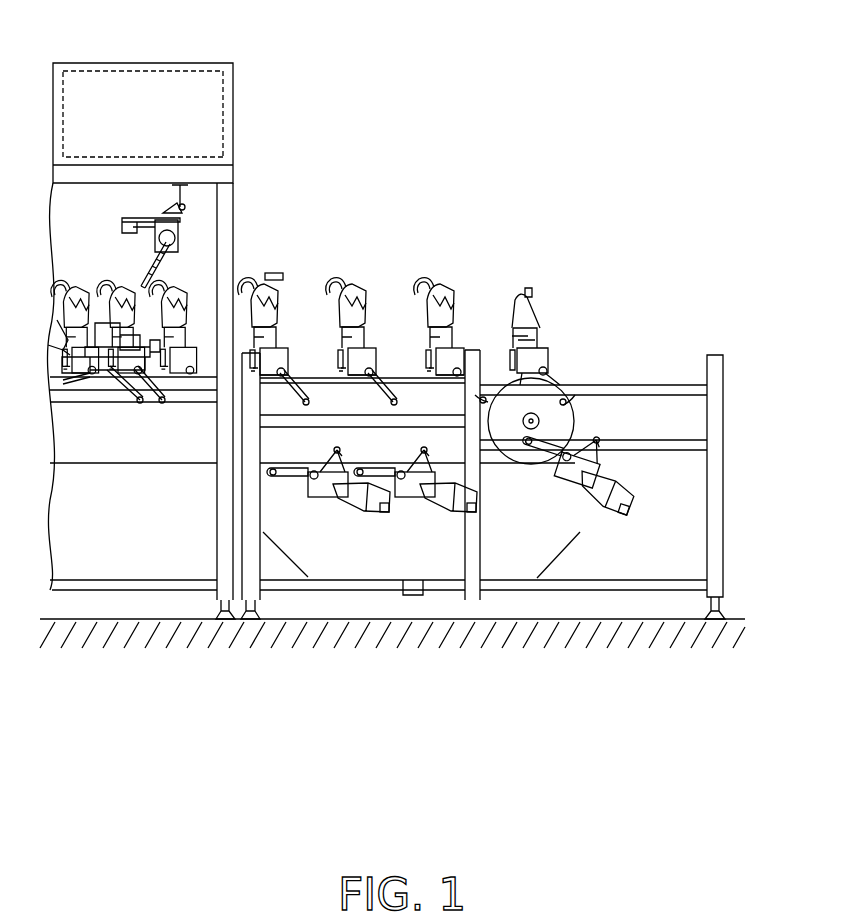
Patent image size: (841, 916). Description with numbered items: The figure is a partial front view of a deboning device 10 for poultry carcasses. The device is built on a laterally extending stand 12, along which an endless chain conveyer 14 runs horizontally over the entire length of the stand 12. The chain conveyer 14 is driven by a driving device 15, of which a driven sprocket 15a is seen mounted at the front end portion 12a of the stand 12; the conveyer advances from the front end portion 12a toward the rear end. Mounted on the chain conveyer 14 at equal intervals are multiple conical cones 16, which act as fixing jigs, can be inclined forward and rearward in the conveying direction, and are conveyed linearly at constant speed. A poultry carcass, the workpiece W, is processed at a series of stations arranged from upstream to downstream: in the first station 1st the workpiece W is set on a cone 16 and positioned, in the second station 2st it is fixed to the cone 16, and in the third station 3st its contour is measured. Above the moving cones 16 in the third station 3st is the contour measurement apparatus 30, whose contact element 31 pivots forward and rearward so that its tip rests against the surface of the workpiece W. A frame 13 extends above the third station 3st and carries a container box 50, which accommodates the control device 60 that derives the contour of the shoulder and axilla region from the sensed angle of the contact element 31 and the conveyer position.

The deboning device 10 is at (472, 140).
The stand 12 is at (720, 348).
The front end portion 12a is at (583, 372).
The frame 13 is at (225, 170).
The chain conveyer 14 is at (400, 373).
The driving device 15 is at (508, 477).
The driven sprocket 15a is at (560, 420).
The cone 16 is at (337, 317).
The contour measurement apparatus 30 is at (132, 253).
The contact element 31 is at (142, 287).
The container box 50 is at (137, 80).
The control device 60 is at (93, 96).
The first station 1st is at (462, 267).
The second station 2st is at (281, 256).
The third station 3st is at (198, 229).
The workpiece w is at (337, 273).